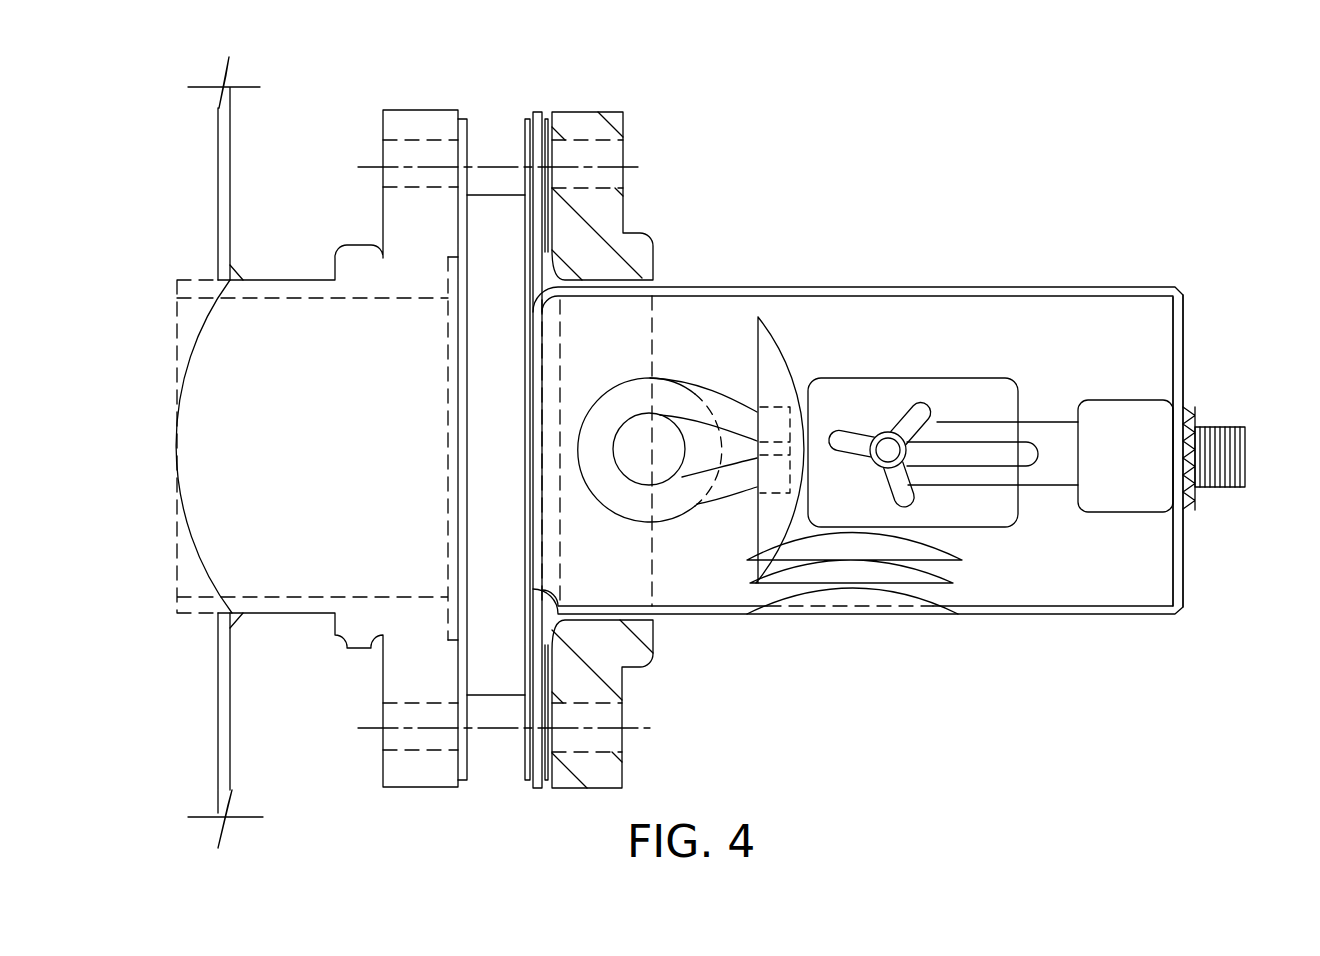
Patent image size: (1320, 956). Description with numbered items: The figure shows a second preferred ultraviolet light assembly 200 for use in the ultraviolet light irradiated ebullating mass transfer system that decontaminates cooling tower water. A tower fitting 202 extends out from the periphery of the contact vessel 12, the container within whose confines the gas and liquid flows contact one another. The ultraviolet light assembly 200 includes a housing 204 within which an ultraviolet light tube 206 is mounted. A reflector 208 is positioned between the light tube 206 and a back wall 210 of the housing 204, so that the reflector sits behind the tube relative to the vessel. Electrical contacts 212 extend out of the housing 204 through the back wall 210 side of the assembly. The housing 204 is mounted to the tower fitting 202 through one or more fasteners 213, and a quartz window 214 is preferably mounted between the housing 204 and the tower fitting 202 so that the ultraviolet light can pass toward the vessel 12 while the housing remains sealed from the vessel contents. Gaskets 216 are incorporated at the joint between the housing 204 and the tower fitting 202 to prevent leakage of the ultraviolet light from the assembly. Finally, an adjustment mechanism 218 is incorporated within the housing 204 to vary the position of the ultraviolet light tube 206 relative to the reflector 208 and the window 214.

The contact vessel 12 is at (230, 108).
The ultraviolet light assembly 200 is at (1105, 165).
The tower fitting 202 is at (263, 277).
The housing 204 is at (1087, 614).
The ultraviolet light tube 206 is at (665, 385).
The reflector 208 is at (783, 347).
The back wall 210 is at (1176, 342).
The electrical contacts 212 is at (1246, 440).
The fasteners 213 is at (643, 732).
The quartz window 214 is at (487, 672).
The gaskets 216 is at (547, 120).
The adjustment mechanism 218 is at (898, 375).